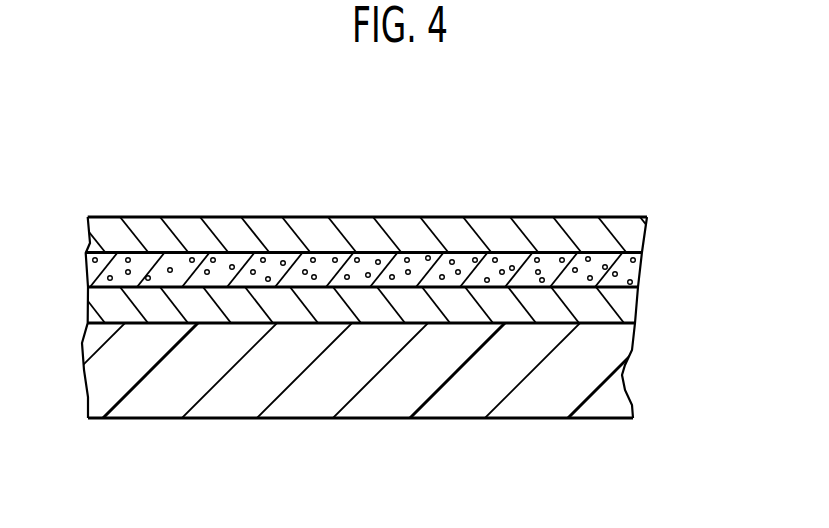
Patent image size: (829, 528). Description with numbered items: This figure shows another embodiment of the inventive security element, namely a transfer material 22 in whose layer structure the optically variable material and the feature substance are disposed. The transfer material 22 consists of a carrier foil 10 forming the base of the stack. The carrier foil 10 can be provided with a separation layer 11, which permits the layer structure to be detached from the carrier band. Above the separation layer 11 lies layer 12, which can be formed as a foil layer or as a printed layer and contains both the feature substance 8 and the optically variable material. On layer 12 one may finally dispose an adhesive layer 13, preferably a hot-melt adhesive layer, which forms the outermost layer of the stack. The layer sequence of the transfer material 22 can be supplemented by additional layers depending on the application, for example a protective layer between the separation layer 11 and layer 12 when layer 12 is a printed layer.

The transfer material 22 is at (118, 158).
The adhesive layer 13 is at (638, 236).
The layer 12 is at (628, 267).
The separation layer 11 is at (620, 307).
The carrier foil 10 is at (622, 378).
The feature substance 8 is at (592, 250).